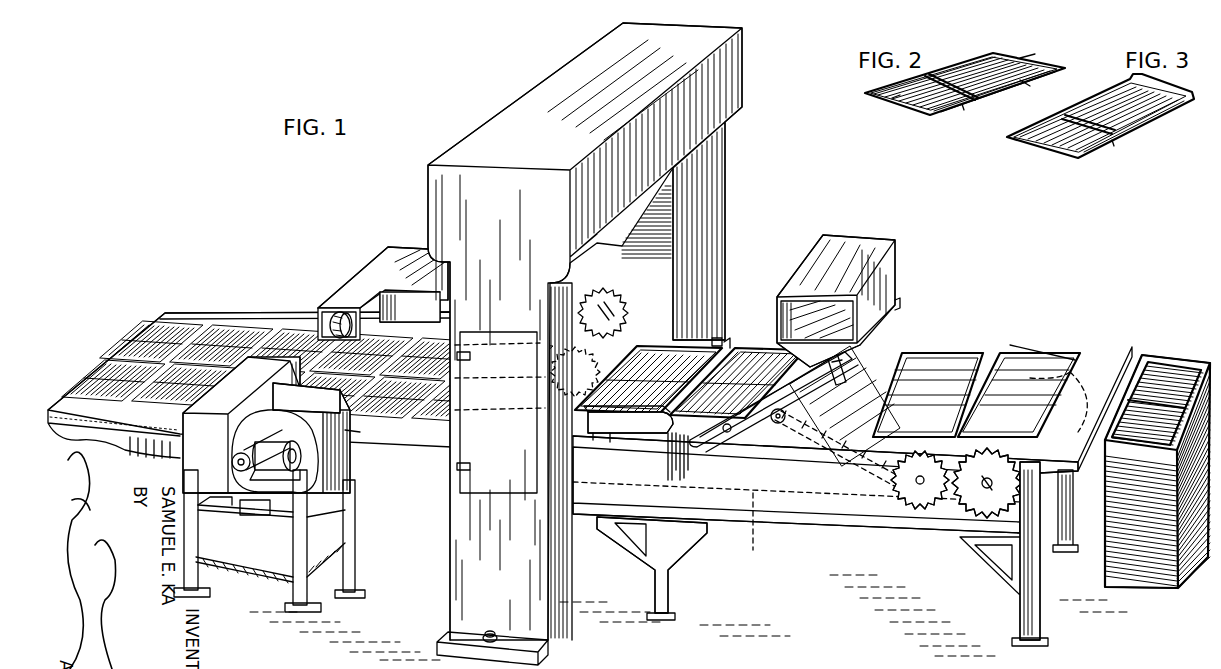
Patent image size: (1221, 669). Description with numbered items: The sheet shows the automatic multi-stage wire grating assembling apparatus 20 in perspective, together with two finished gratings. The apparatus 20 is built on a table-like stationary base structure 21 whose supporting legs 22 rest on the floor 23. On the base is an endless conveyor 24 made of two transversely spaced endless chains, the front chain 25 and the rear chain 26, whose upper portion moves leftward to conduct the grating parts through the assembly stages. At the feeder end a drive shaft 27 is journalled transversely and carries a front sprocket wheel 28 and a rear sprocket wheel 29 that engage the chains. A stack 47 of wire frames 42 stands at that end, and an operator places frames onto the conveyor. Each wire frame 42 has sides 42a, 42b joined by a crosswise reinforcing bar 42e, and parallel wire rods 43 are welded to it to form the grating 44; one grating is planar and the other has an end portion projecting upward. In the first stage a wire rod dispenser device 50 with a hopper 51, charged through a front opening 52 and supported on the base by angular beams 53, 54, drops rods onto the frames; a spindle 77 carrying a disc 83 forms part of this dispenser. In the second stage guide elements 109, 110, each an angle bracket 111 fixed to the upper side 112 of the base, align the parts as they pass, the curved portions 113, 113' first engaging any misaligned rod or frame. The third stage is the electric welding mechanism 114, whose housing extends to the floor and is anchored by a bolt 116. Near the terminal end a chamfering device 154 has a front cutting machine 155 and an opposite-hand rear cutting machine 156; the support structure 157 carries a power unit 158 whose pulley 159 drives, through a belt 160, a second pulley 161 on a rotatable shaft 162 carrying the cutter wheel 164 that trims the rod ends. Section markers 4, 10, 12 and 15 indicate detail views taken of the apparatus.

In FIG. 1, the section line 4- 4 is at (753, 272).
In FIG. 1, the conveyor sprocket 10 is at (648, 298).
In FIG. 1, the loading station section 12 is at (318, 237).
In FIG. 1, the section line 15- 15 is at (704, 5).
In FIG. 1, the automatic multi-stage wire grating assembling apparatus 20 is at (1052, 277).
In FIG. 1, the stationary base structure 21 is at (598, 528).
In FIG. 1, the supporting legs 22 is at (670, 590).
In FIG. 1, the floor 23 is at (690, 617).
In FIG. 1, the endless conveyor 24 is at (950, 354).
In FIG. 1, the endless front chain 25 is at (913, 330).
In FIG. 1, the endless rear chain 26 is at (916, 358).
In FIG. 1, the drive shaft 27 is at (1022, 346).
In FIG. 1, the front sprocket wheel 28 is at (962, 520).
In FIG. 1, the rear sprocket wheel 29 is at (1085, 389).
In FIG. 1, the wire frame 42 is at (976, 352).
In FIG. 2, the frame side 42a is at (1022, 79).
In FIG. 2, the frame side 42b is at (993, 53).
In FIG. 2, the reinforcing bar 42e is at (967, 80).
In FIG. 3, the reinforcing bar 42e is at (1138, 128).
In FIG. 2, the wire rods 43 is at (1020, 58).
In FIG. 1, the wire grating 44 is at (692, 342).
In FIG. 2, the wire grating 44 is at (962, 105).
In FIG. 3, the wire grating 44 is at (1112, 140).
In FIG. 1, the stack of wire frames 47 is at (1160, 589).
In FIG. 1, the wire rod dispenser device 50 is at (884, 246).
In FIG. 1, the hopper 51 is at (890, 264).
In FIG. 1, the hopper opening 52 is at (778, 316).
In FIG. 1, the angularly disposed beam 53 is at (728, 433).
In FIG. 1, the angularly disposed beam 54 is at (834, 366).
In FIG. 1, the rotatable spindle 77 is at (812, 432).
In FIG. 1, the front disc 83 is at (788, 422).
In FIG. 1, the guide element 109 is at (641, 434).
In FIG. 1, the guide element 110 is at (716, 338).
In FIG. 1, the angle bracket 111 is at (611, 437).
In FIG. 1, the upper side of base structure 112 is at (593, 435).
In FIG. 1, the curved vertical portion 113 is at (687, 456).
In FIG. 1, the curved portion 113' is at (745, 327).
In FIG. 1, the electric welding mechanism 114 is at (743, 63).
In FIG. 1, the bolt 116 is at (490, 630).
In FIG. 1, the chamfering device 154 is at (408, 243).
In FIG. 1, the front cutting machine 155 is at (333, 437).
In FIG. 1, the rear cutting machine 156 is at (389, 307).
In FIG. 1, the support structure 157 is at (242, 592).
In FIG. 1, the power unit 158 is at (275, 460).
In FIG. 1, the pulley 159 is at (231, 459).
In FIG. 1, the belt 160 is at (236, 430).
In FIG. 1, the second pulley 161 is at (283, 388).
In FIG. 1, the rotatable shaft 162 is at (322, 306).
In FIG. 1, the cutter wheel 164 is at (350, 318).